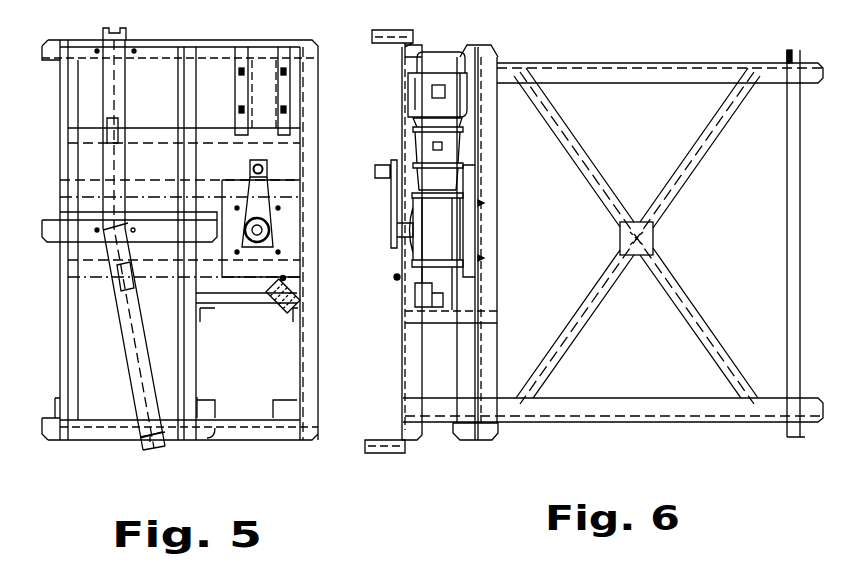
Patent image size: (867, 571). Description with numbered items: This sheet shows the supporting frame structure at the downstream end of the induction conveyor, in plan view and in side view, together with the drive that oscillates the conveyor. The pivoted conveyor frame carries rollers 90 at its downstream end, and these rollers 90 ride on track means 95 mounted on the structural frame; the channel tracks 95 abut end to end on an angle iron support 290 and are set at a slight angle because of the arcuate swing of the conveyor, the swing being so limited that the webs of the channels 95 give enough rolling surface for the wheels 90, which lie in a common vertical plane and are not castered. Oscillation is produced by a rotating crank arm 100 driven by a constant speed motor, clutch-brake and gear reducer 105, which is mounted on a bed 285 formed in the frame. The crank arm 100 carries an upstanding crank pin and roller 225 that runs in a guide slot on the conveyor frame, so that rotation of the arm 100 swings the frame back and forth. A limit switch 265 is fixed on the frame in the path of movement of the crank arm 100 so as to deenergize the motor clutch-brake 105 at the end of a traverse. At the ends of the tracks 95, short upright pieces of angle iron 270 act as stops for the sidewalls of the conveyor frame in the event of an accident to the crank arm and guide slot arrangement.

In FIG. 5, the rollers 90 is at (107, 128).
In FIG. 5, the track means 95 is at (120, 75).
In FIG. 5, the crank arm 100 is at (262, 188).
In FIG. 6, the constant speed motor, clutch-brake and gear reducer 105 is at (418, 92).
In FIG. 5, the crank pin and roller 225 is at (268, 165).
In FIG. 6, the crank pin and roller 225 is at (378, 164).
In FIG. 5, the limit switch 265 is at (284, 278).
In FIG. 6, the limit switch 265 is at (405, 280).
In FIG. 5, the upright pieces of angle iron 270 is at (165, 445).
In FIG. 6, the upright pieces of angle iron 270 is at (367, 452).
In FIG. 5, the bed 285 is at (258, 82).
In FIG. 5, the angle iron support 290 is at (53, 232).